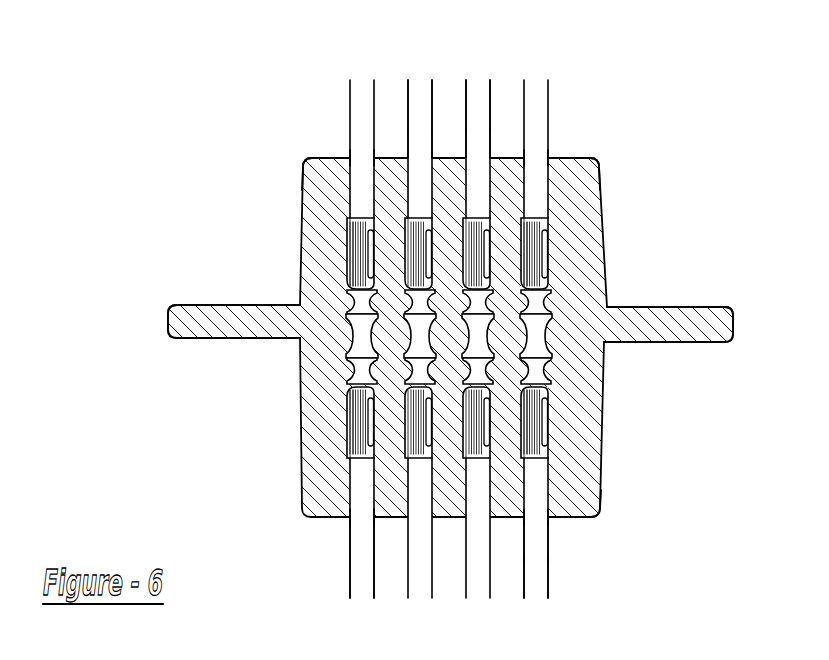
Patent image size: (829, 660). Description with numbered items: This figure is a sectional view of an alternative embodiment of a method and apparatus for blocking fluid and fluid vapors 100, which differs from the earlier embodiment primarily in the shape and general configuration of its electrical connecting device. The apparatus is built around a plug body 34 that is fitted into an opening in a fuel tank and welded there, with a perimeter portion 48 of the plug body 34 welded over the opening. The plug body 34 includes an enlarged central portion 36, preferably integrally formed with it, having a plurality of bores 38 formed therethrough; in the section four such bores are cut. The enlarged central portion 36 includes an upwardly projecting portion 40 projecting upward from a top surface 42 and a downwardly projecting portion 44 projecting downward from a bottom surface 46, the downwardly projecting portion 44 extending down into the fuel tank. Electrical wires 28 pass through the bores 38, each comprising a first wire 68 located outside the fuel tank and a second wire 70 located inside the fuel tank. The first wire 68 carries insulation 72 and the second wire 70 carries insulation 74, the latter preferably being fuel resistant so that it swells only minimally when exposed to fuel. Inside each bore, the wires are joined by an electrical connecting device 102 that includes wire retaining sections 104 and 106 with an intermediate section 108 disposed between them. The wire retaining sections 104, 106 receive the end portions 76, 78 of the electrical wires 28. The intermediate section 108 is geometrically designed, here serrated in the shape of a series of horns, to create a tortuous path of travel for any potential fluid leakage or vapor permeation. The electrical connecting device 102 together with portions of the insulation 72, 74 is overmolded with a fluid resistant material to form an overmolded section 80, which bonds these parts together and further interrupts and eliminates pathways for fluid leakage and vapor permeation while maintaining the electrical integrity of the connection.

The method and apparatus for blocking fluid and fluid vapors 100 is at (455, 335).
The plug body 34 is at (690, 212).
The enlarged central portion 36 is at (597, 175).
The upwardly projecting portion 40 is at (302, 168).
The downwardly projecting portion 44 is at (592, 490).
The top surface 42 is at (181, 304).
The bottom surface 46 is at (181, 339).
The perimeter portion 48 is at (166, 318).
The overmolded section 80 is at (642, 352).
The bores 38 is at (350, 158).
The electrical wires 28 is at (362, 93).
The first wire 68 is at (415, 100).
The insulation 72 is at (433, 138).
The second wire 70 is at (350, 580).
The insulation 74 is at (375, 586).
The end portion 76 is at (330, 222).
The end portion 78 is at (333, 462).
The wire retaining section 104 is at (350, 246).
The electrical connecting device 102 is at (338, 303).
The intermediate section 108 is at (347, 342).
The wire retaining section 106 is at (352, 415).